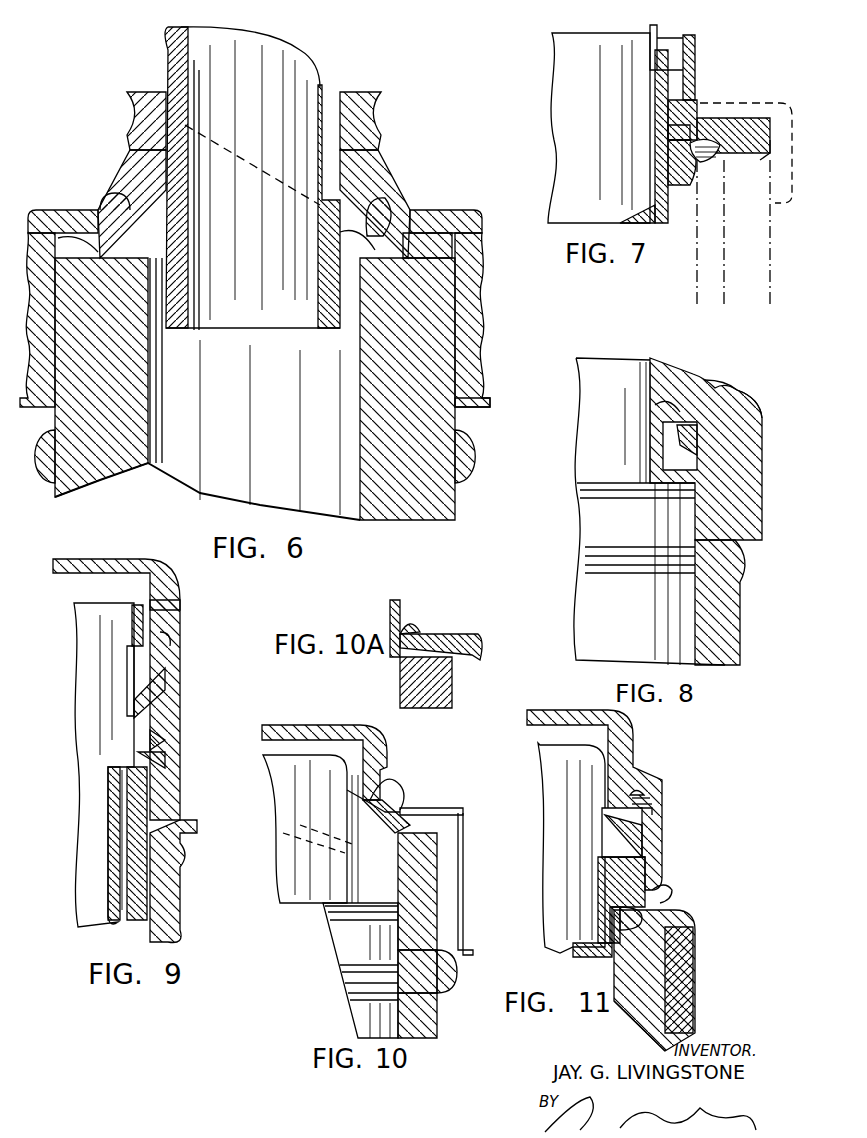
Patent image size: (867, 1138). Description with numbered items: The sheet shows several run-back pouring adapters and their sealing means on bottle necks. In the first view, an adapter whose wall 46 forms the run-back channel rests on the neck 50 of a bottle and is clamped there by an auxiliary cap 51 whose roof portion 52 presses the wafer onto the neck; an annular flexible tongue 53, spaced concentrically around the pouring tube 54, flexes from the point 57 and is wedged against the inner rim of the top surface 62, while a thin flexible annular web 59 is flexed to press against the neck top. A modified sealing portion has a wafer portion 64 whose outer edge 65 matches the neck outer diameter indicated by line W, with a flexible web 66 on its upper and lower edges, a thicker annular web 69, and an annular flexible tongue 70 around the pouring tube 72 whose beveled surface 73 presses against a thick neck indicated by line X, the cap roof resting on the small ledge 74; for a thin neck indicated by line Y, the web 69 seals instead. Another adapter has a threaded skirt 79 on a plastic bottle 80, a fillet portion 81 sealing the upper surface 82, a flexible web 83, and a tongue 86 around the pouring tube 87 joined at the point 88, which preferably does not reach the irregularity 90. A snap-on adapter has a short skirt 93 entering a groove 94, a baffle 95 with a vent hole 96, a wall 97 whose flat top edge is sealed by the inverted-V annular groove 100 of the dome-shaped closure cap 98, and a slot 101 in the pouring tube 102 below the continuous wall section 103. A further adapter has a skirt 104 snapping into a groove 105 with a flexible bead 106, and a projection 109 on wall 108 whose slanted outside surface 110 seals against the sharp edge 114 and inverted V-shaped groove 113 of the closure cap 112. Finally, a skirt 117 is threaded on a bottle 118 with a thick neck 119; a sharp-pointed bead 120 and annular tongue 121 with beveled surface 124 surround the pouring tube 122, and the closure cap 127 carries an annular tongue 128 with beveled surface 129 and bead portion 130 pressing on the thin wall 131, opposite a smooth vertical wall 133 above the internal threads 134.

In FIG. 6, the wall 46 is at (375, 132).
In FIG. 6, the neck 50 is at (364, 470).
In FIG. 6, the auxiliary cap 51 is at (474, 398).
In FIG. 6, the roof portion 52 is at (440, 213).
In FIG. 6, the annular flexible tongue 53 is at (358, 257).
In FIG. 6, the pouring tube 54 is at (252, 328).
In FIG. 6, the flex point 57 is at (350, 236).
In FIG. 6, the flexible annular web 59 is at (382, 225).
In FIG. 6, the top surface 62 is at (390, 273).
In FIG. 7, the wafer portion 64 is at (738, 118).
In FIG. 7, the outer edge 65 is at (770, 150).
In FIG. 7, the flexible web 66 is at (758, 118).
In FIG. 7, the annular web 69 is at (722, 158).
In FIG. 7, the annular flexible tongue 70 is at (680, 165).
In FIG. 7, the pouring tube 72 is at (566, 151).
In FIG. 7, the beveled surface 73 is at (690, 183).
In FIG. 7, the ledge 74 is at (705, 118).
In FIG. 8, the threaded skirt 79 is at (752, 455).
In FIG. 8, the plastic bottle 80 is at (712, 574).
In FIG. 8, the fillet portion 81 is at (762, 417).
In FIG. 8, the upper surface 82 is at (707, 500).
In FIG. 8, the flexible web 83 is at (722, 393).
In FIG. 8, the tongue 86 is at (680, 453).
In FIG. 8, the pouring tube 87 is at (585, 375).
In FIG. 8, the joining point 88 is at (680, 410).
In FIG. 8, the irregularity 90 is at (590, 497).
In FIG. 9, the short skirt 93 is at (162, 740).
In FIG. 9, the groove 94 is at (166, 760).
In FIG. 9, the baffle 95 is at (108, 818).
In FIG. 9, the vent hole 96 is at (100, 927).
In FIG. 9, the wall 97 is at (168, 686).
In FIG. 9, the dome-shaped closure cap 98 is at (100, 568).
In FIG. 9, the annular groove 100 is at (166, 640).
In FIG. 9, the slot 101 is at (128, 680).
In FIG. 9, the pouring tube 102 is at (78, 653).
In FIG. 9, the wall section 103 is at (132, 622).
In FIG. 10, the skirt 104 is at (430, 843).
In FIG. 10, the groove 105 is at (425, 866).
In FIG. 10, the flexible bead 106 is at (463, 813).
In FIG. 10, the wall 108 is at (353, 838).
In FIG. 10A, the projection 109 is at (402, 665).
In FIG. 10, the projection 109 is at (387, 813).
In FIG. 10A, the outside surface 110 is at (428, 634).
In FIG. 10, the outside surface 110 is at (395, 808).
In FIG. 10, the closure cap 112 is at (310, 740).
In FIG. 10A, the inverted V-shaped groove 113 is at (395, 650).
In FIG. 10, the inverted V-shaped groove 113 is at (375, 795).
In FIG. 10A, the sharp edge 114 is at (455, 640).
In FIG. 10, the sharp edge 114 is at (395, 826).
In FIG. 11, the skirt 117 is at (693, 1005).
In FIG. 11, the bottle 118 is at (580, 957).
In FIG. 11, the thick neck 119 is at (645, 1037).
In FIG. 11, the sharp-pointed bead 120 is at (695, 935).
In FIG. 11, the annular tongue 121 is at (662, 890).
In FIG. 11, the pouring tube 122 is at (548, 748).
In FIG. 11, the beveled surface 124 is at (636, 925).
In FIG. 11, the closure cap 127 is at (555, 725).
In FIG. 11, the annular tongue 128 is at (620, 805).
In FIG. 11, the beveled surface 129 is at (650, 815).
In FIG. 11, the bead portion 130 is at (652, 805).
In FIG. 11, the wall 131 is at (648, 795).
In FIG. 11, the smooth vertical wall 133 is at (640, 790).
In FIG. 11, the internal threads 134 is at (648, 858).
In FIG. 7, the inner surface line X is at (695, 285).
In FIG. 7, the inner wall line Y is at (730, 252).
In FIG. 7, the outer diameter line W is at (772, 272).